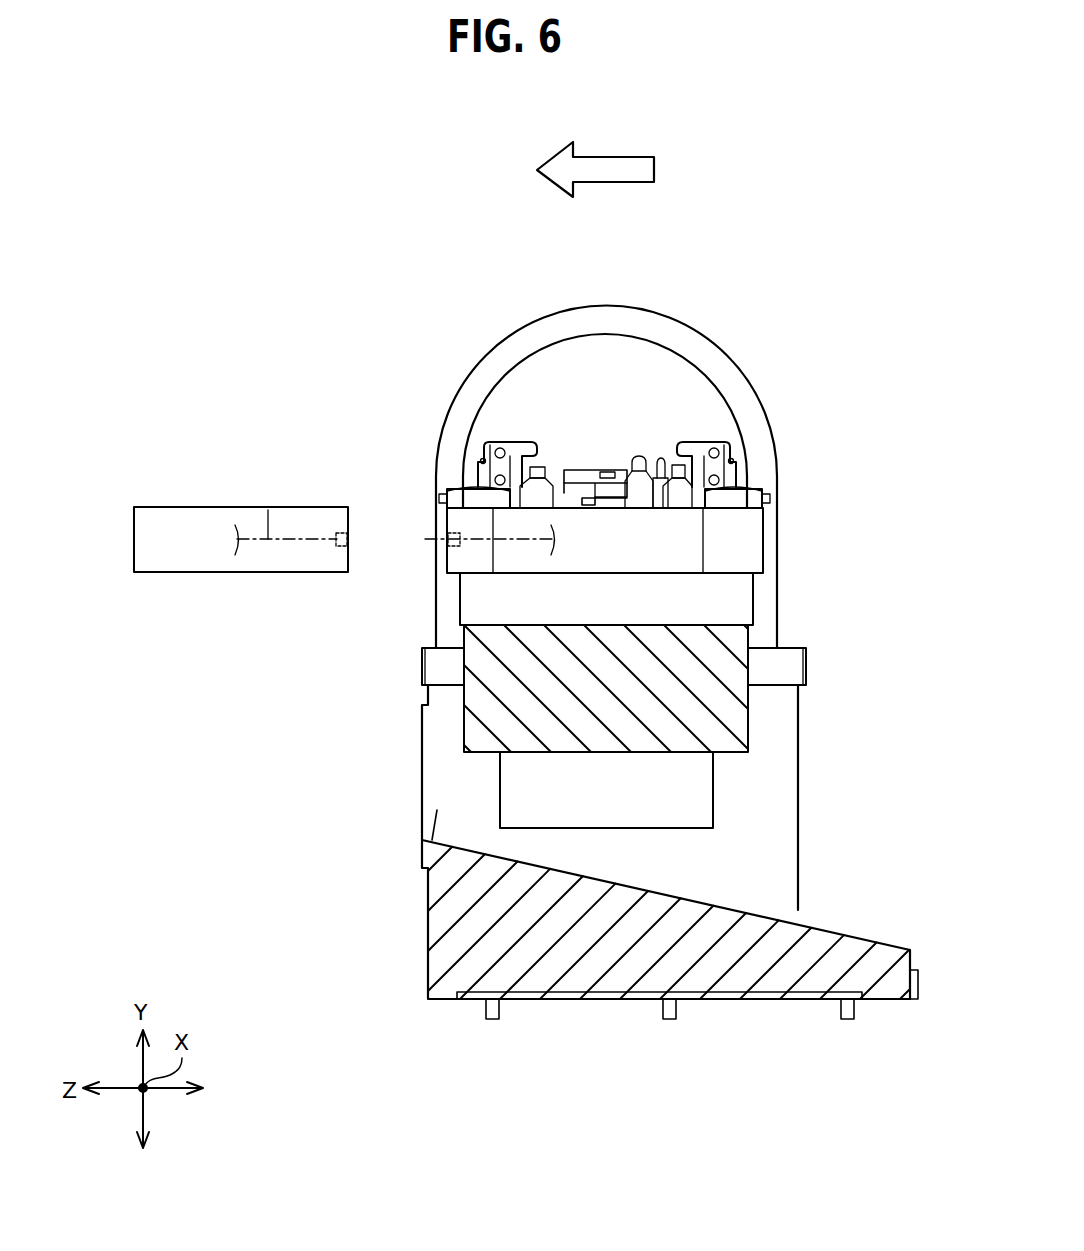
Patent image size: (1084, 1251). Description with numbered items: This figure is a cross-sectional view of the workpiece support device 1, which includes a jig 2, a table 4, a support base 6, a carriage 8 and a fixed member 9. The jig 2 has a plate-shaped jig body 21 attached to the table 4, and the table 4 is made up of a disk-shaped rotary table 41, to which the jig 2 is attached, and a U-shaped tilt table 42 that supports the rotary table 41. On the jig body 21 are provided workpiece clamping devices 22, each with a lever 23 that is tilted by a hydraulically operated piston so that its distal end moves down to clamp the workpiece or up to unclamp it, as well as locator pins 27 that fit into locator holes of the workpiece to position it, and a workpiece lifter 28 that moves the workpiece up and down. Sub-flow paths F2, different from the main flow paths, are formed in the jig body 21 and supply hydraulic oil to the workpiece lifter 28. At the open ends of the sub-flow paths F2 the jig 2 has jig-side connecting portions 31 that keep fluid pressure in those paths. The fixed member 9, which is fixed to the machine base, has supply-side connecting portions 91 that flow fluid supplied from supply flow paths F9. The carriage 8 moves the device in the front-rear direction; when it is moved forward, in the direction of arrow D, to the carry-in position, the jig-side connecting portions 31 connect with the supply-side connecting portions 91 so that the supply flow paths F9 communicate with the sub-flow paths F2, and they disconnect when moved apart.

The workpiece support device 1 is at (752, 274).
The jig 2 is at (606, 473).
The table 4 is at (696, 662).
The support base 6 is at (500, 346).
The carriage 8 is at (428, 935).
The fixed member 9 is at (248, 488).
The jig body 21 is at (765, 560).
The workpiece clamping device 22 is at (753, 488).
The lever 23 is at (707, 447).
The locator pin 27 is at (635, 458).
The workpiece lifter 28 is at (573, 470).
The jig-side connecting portion 31 is at (448, 536).
The rotary table 41 is at (753, 593).
The tilt table 42 is at (750, 722).
The supply-side connecting portion 91 is at (343, 533).
The sub-flow path F2 is at (479, 545).
The supply flow path F9 is at (268, 510).
The arrow D is at (610, 154).